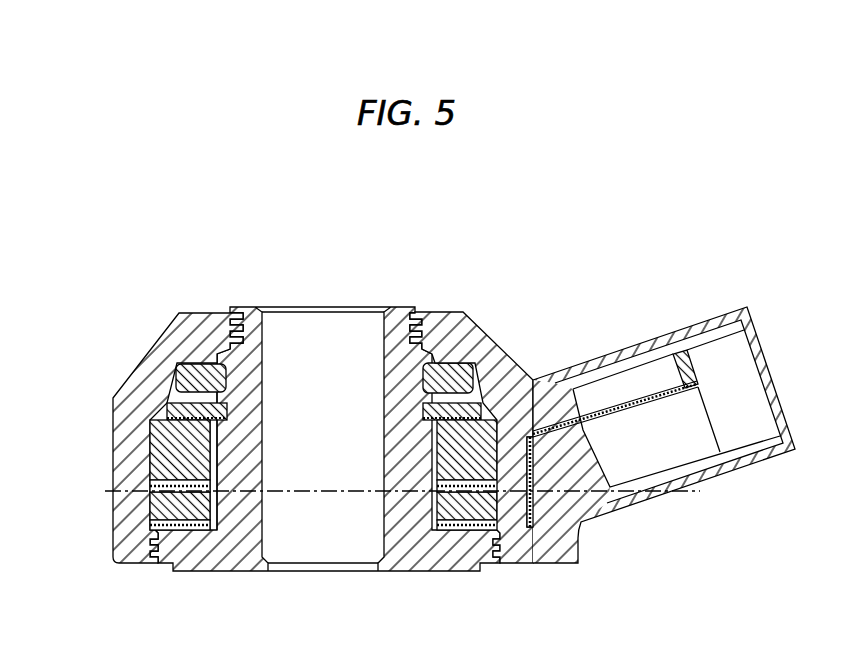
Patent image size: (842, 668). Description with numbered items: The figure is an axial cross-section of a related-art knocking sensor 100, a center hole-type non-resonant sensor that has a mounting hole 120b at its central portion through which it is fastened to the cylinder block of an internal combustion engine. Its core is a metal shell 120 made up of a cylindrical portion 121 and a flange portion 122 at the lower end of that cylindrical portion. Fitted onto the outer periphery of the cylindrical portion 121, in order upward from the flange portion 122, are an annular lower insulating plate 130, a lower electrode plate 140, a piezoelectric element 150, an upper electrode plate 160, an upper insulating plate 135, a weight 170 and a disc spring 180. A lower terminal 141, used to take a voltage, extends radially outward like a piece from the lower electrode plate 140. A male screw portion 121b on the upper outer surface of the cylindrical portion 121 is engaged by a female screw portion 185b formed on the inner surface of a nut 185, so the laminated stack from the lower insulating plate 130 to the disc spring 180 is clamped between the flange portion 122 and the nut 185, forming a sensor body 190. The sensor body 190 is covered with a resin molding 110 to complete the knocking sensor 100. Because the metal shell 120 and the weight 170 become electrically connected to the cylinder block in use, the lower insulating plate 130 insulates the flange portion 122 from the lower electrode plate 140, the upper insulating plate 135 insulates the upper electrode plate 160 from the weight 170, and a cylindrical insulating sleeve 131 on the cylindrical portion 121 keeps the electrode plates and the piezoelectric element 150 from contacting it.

The knocking sensor 100 is at (600, 250).
The resin molding 110 is at (450, 308).
The metal shell 120 is at (458, 548).
The mounting hole 120b is at (263, 523).
The cylindrical portion 121 is at (243, 307).
The male screw portion 121b is at (428, 356).
The flange portion 122 is at (190, 542).
The lower insulating plate 130 is at (150, 528).
The insulating sleeve 131 is at (228, 535).
The upper insulating plate 135 is at (150, 455).
The lower electrode plate 140 is at (520, 527).
The lower terminal 141 is at (697, 373).
The piezoelectric element 150 is at (150, 508).
The upper electrode plate 160 is at (590, 518).
The weight 170 is at (530, 430).
The disc spring 180 is at (127, 393).
The nut 185 is at (185, 365).
The female screw portion 185b is at (228, 398).
The sensor body 190 is at (95, 422).